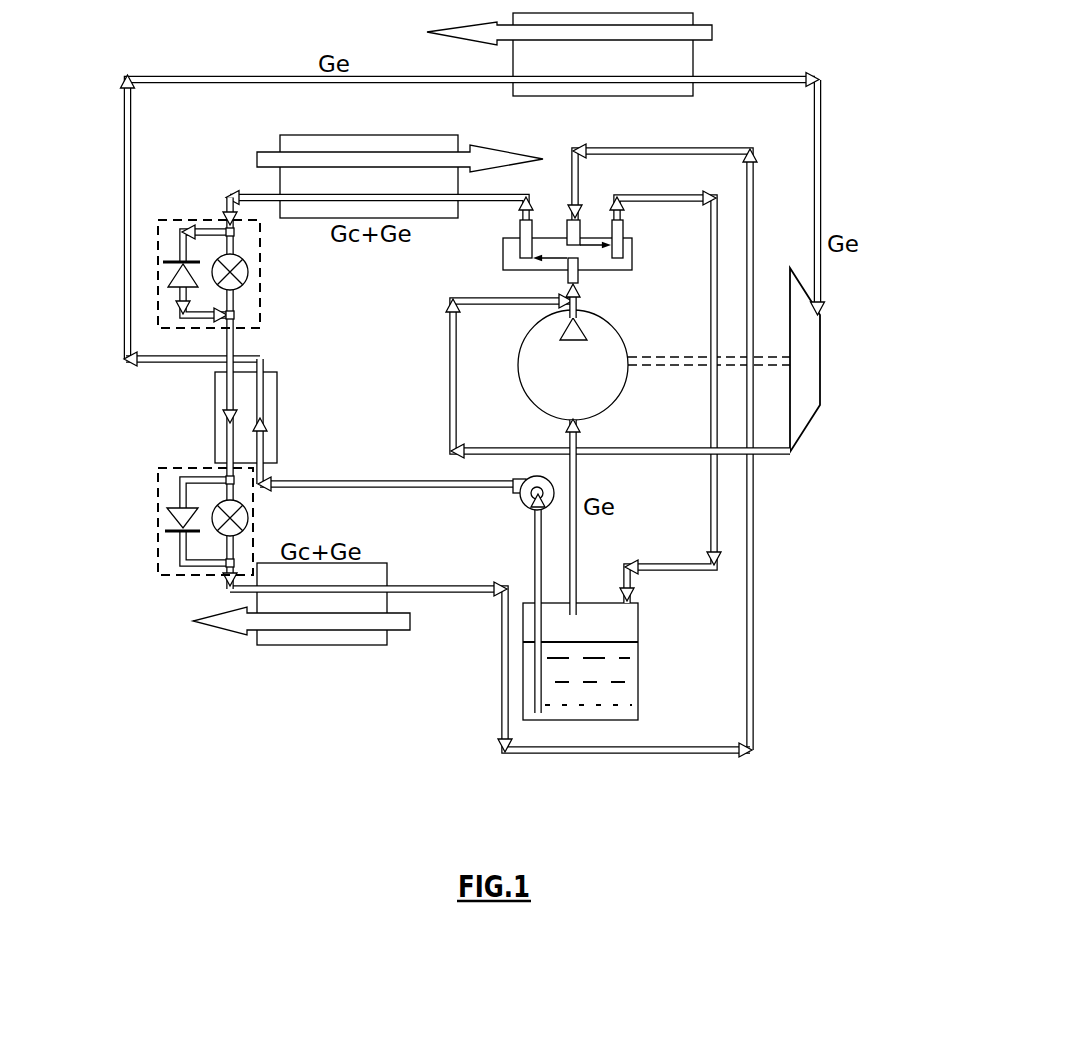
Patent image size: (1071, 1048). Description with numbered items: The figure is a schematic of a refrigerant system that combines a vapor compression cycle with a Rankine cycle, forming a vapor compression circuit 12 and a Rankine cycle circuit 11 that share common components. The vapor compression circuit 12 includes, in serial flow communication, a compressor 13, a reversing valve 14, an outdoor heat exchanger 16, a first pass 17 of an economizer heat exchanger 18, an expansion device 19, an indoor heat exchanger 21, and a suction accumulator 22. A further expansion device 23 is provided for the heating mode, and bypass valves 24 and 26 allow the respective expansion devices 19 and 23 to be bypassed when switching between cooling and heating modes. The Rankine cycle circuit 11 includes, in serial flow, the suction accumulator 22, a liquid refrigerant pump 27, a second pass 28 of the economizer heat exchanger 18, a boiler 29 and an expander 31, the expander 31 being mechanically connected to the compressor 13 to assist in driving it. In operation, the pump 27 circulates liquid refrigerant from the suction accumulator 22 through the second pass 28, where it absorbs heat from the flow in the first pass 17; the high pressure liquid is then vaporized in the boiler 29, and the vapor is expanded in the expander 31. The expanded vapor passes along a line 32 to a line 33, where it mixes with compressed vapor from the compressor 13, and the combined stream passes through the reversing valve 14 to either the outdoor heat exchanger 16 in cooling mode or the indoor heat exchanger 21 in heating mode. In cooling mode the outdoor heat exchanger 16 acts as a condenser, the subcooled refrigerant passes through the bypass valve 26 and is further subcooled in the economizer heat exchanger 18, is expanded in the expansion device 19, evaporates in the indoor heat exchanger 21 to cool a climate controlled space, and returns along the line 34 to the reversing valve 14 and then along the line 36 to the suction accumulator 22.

The Rankine cycle circuit 11 is at (843, 91).
The vapor compression circuit 12 is at (786, 670).
The compressor 13 is at (612, 345).
The reversing valve 14 is at (632, 250).
The outdoor heat exchanger 16 is at (380, 148).
The first pass of the economizer heat exchanger 17 is at (220, 390).
The economizer heat exchanger 18 is at (292, 368).
The expansion device 19 is at (250, 518).
The indoor heat exchanger 21 is at (363, 575).
The suction accumulator 22 is at (638, 628).
The expansion device 23 is at (243, 272).
The bypass valve 24 is at (172, 518).
The bypass valve 26 is at (168, 275).
The liquid refrigerant pump 27 is at (525, 500).
The second pass of the economizer heat exchanger 28 is at (270, 398).
The boiler 29 is at (693, 15).
The expander 31 is at (810, 338).
The line 32 is at (642, 455).
The line 33 is at (578, 305).
The line 34 is at (753, 585).
The line 36 is at (718, 238).